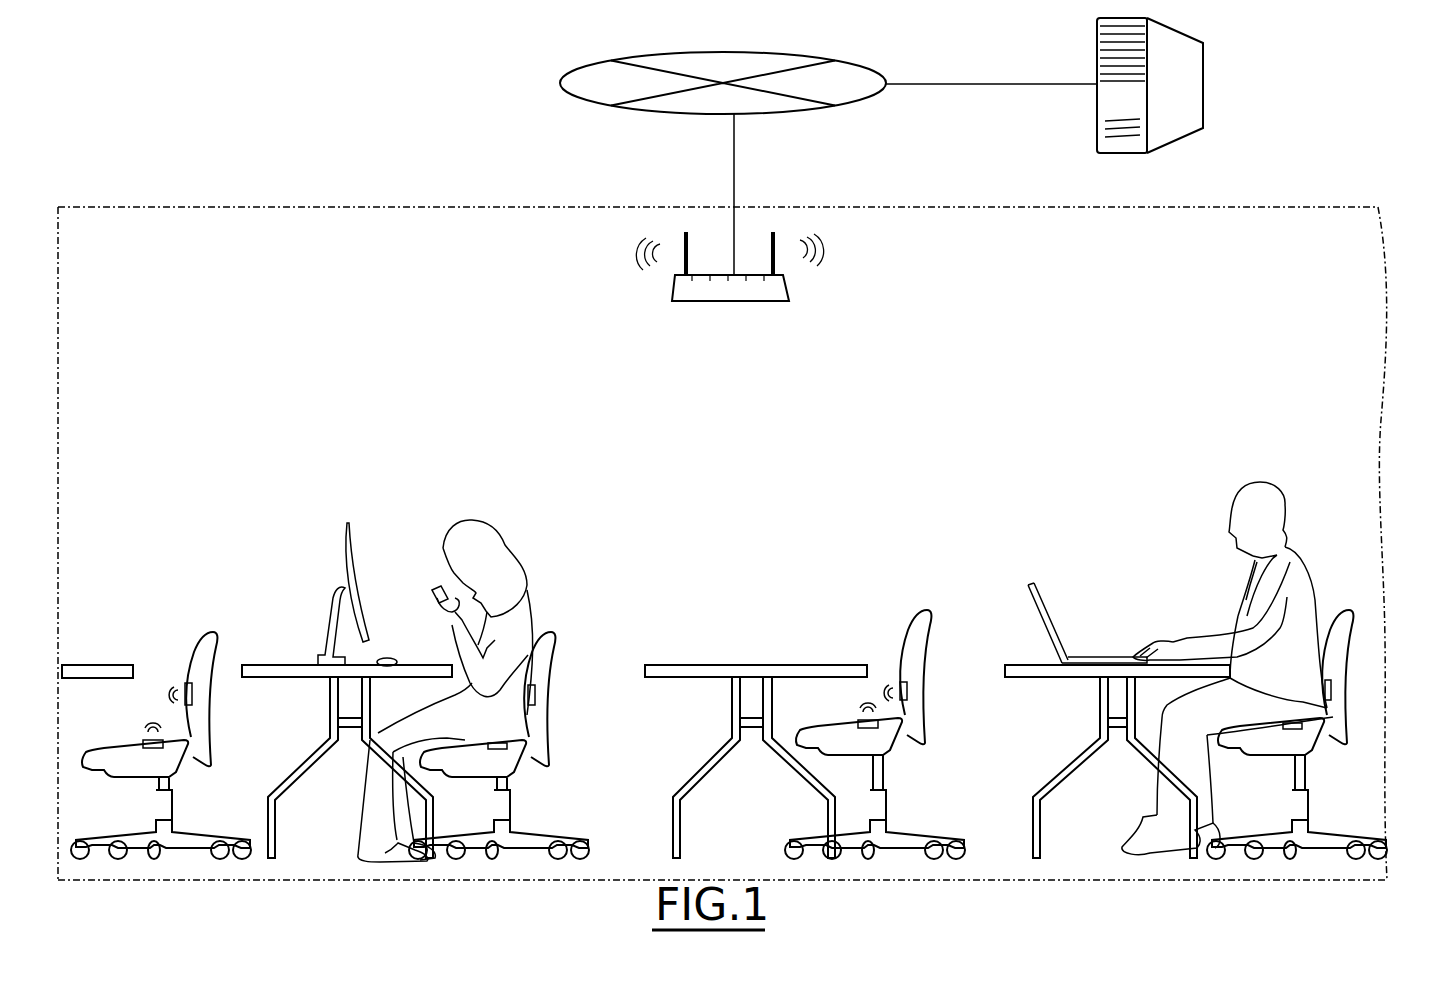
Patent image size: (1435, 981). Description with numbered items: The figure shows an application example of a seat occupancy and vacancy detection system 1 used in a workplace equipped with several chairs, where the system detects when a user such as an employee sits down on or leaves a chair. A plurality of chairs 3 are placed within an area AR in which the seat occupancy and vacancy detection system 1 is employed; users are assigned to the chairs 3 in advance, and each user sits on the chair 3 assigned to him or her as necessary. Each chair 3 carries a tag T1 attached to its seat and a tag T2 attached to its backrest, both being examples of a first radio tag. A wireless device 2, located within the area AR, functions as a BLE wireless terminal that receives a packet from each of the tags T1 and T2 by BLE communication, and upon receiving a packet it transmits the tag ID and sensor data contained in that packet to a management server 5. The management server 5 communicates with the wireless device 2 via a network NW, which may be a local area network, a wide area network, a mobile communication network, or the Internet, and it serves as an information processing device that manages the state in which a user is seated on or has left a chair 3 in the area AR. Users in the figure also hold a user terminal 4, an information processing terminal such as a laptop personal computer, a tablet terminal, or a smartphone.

The seat occupancy and vacancy detection system 1 is at (1302, 180).
The wireless device 2 is at (672, 288).
The chair 3 is at (202, 742).
The user terminal 4 is at (438, 593).
The management server 5 is at (1203, 93).
The network NW is at (560, 84).
The area AR is at (1340, 402).
The tag T1 is at (147, 752).
The tag T2 is at (193, 693).